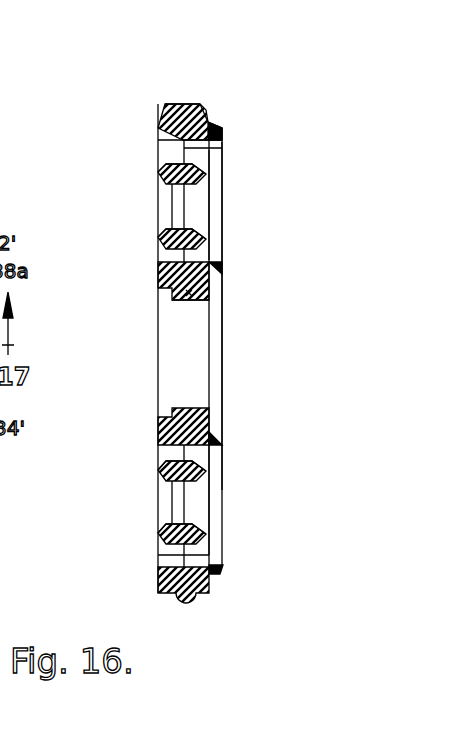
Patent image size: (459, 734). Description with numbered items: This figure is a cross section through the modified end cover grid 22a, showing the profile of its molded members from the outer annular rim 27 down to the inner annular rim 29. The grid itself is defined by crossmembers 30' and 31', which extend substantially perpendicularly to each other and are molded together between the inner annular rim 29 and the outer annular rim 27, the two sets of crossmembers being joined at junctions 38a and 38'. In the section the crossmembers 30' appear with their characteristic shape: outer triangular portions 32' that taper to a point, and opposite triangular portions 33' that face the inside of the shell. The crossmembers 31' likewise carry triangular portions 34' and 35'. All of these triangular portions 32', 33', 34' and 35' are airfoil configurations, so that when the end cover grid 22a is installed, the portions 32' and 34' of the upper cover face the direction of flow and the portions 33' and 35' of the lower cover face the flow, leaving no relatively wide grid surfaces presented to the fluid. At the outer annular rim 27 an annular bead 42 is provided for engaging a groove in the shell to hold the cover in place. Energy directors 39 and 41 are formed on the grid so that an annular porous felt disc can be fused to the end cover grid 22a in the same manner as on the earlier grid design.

The end cover grid 22a is at (206, 102).
The annular bead 42 is at (174, 102).
The energy director 39 is at (212, 132).
The triangular portion 33' is at (250, 312).
The crossmember 30' is at (218, 352).
The triangular portion 35' is at (237, 364).
The crossmember 31' is at (133, 353).
The triangular portion 32' is at (144, 309).
The triangular portion 34' is at (144, 327).
The junction 38' is at (127, 377).
The junction 38a is at (162, 262).
The energy director 41 is at (214, 270).
The inner annular rim 29 is at (209, 292).
The outer annular rim 27 is at (200, 603).